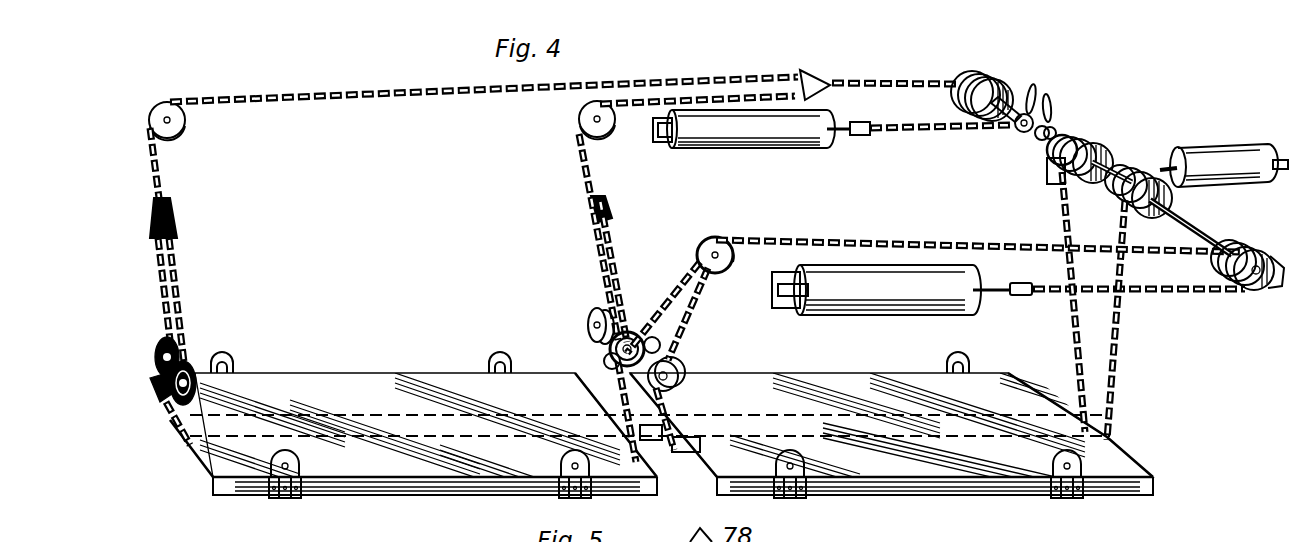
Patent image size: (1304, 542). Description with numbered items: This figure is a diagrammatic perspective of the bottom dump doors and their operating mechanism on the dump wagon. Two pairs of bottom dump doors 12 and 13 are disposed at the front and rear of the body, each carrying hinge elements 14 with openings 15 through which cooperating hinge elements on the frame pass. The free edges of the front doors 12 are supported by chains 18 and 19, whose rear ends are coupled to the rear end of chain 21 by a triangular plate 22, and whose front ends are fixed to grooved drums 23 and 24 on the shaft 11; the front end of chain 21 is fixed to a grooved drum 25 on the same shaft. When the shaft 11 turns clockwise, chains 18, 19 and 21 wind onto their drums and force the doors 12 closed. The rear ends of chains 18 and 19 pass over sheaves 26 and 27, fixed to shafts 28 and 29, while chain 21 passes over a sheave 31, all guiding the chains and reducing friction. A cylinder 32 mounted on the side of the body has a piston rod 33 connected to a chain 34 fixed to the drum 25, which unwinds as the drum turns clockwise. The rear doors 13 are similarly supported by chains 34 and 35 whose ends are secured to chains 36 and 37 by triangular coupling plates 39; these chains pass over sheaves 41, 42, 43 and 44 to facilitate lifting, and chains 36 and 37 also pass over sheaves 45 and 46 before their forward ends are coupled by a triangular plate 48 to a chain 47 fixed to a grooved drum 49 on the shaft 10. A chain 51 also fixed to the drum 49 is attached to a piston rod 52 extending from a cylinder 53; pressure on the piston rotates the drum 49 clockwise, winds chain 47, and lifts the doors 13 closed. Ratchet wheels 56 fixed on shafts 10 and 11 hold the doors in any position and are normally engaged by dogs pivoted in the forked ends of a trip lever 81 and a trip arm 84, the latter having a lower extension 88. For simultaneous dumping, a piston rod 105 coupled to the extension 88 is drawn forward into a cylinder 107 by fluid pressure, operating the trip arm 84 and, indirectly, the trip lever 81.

The shaft 10 is at (1016, 108).
The shaft 11 is at (1205, 228).
The bottom dump door 12 is at (794, 388).
The bottom dump door 13 is at (328, 390).
The hinge element 14 is at (492, 365).
The opening 15 is at (560, 490).
The chain 18 is at (680, 300).
The chain 19 is at (678, 353).
The chain 21 is at (705, 248).
The triangular plate 22 is at (673, 288).
The grooved drum 23 is at (1106, 152).
The grooved drum 24 is at (1180, 193).
The grooved drum 25 is at (1250, 293).
The sheave 26 is at (662, 340).
The sheave 27 is at (682, 379).
The shaft 28 is at (612, 345).
The shaft 29 is at (612, 383).
The sheave 31 is at (740, 248).
The cylinder 32 is at (868, 316).
The piston rod 33 is at (1003, 297).
The chain 34 is at (186, 301).
The chain 35 is at (180, 277).
The chain 36 is at (163, 172).
The chain 37 is at (580, 159).
The triangular coupling plate 39 is at (168, 208).
The sheave 41 is at (613, 364).
The sheave 42 is at (590, 316).
The sheave 43 is at (197, 361).
The sheave 44 is at (190, 340).
The sheave 45 is at (186, 121).
The sheave 46 is at (578, 118).
The chain 47 is at (880, 84).
The triangular plate 48 is at (813, 80).
The grooved drum 49 is at (978, 74).
The chain 51 is at (948, 133).
The piston rod 52 is at (858, 136).
The cylinder 53 is at (768, 148).
The ratchet wheel 56 is at (1017, 131).
The trip lever 81 is at (1036, 98).
The trip arm 84 is at (1052, 118).
The lower extension 88 is at (1047, 160).
The piston rod 105 is at (1055, 182).
The cylinder 107 is at (1216, 152).